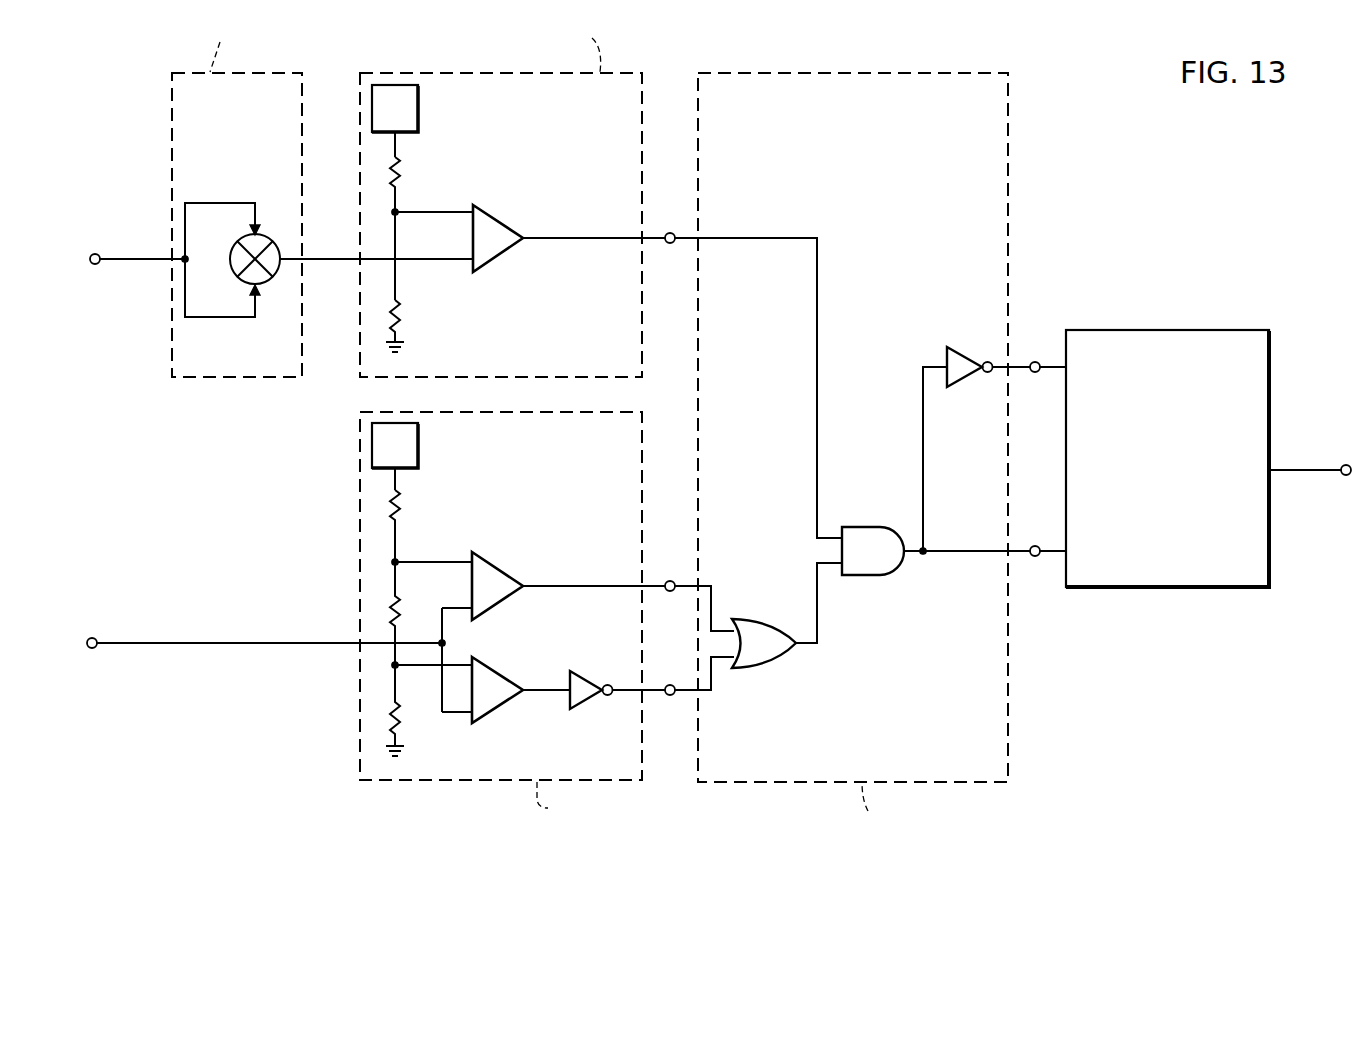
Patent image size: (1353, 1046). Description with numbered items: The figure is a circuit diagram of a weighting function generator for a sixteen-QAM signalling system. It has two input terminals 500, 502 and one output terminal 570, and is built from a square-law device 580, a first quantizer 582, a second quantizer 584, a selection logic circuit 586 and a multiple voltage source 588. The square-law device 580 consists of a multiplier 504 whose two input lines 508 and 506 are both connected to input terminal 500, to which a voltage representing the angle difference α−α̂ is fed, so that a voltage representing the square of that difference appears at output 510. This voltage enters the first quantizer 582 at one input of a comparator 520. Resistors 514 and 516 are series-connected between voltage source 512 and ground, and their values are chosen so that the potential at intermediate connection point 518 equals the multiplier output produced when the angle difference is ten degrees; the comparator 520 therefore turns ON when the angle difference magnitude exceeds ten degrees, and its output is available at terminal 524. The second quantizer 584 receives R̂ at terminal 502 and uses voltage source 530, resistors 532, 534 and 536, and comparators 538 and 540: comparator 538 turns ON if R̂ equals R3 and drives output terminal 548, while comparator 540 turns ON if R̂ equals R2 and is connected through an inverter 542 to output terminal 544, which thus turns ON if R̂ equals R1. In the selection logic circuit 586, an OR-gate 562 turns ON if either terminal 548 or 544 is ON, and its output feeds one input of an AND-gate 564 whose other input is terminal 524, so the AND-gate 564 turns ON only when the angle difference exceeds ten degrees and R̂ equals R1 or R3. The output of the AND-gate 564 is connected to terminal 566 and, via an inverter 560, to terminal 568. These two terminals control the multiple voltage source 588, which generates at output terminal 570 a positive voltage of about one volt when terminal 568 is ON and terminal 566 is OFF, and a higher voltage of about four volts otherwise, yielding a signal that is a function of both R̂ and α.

The input terminal 500 is at (97, 265).
The input terminal 502 is at (93, 649).
The multiplier 504 is at (246, 243).
The input line 506 is at (257, 298).
The input line 508 is at (257, 227).
The output 510 is at (335, 254).
The voltage source 512 is at (415, 118).
The resistor 514 is at (402, 172).
The resistor 516 is at (402, 313).
The intermediate connection point 518 is at (398, 210).
The comparator 520 is at (497, 226).
The terminal 524 is at (670, 232).
The voltage source 530 is at (415, 455).
The resistor 532 is at (402, 510).
The resistor 534 is at (402, 610).
The resistor 536 is at (402, 716).
The comparator 538 is at (497, 576).
The comparator 540 is at (497, 680).
The inverter 542 is at (582, 680).
The output terminal 544 is at (670, 684).
The output terminal 548 is at (670, 580).
The inverter 560 is at (952, 358).
The OR-gate 562 is at (778, 650).
The AND-gate 564 is at (868, 535).
The terminal 566 is at (1037, 545).
The terminal 568 is at (1037, 361).
The output terminal 570 is at (1311, 457).
The square-law device 580 is at (271, 378).
The first quantizer 582 is at (540, 378).
The second quantizer 584 is at (510, 782).
The selection logic circuit 586 is at (810, 782).
The multiple voltage source 588 is at (1150, 578).